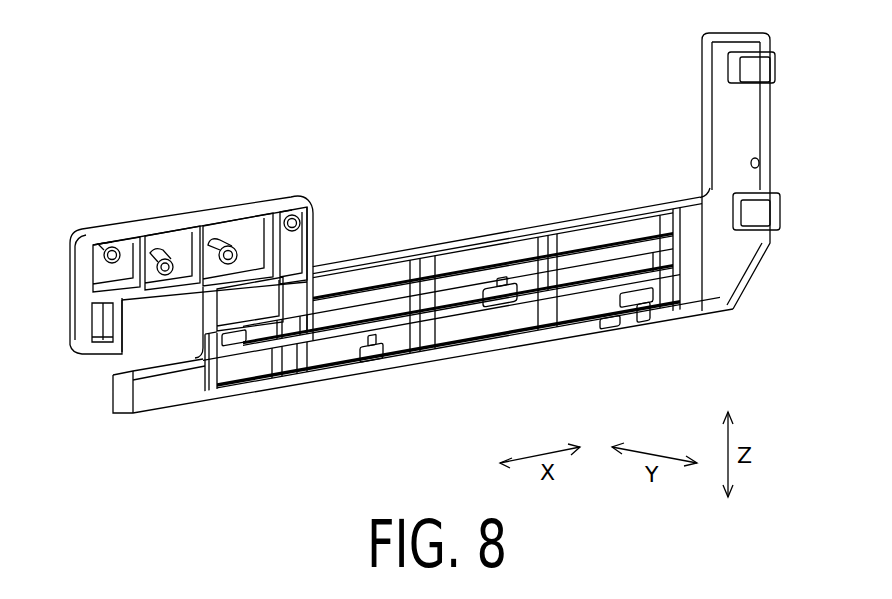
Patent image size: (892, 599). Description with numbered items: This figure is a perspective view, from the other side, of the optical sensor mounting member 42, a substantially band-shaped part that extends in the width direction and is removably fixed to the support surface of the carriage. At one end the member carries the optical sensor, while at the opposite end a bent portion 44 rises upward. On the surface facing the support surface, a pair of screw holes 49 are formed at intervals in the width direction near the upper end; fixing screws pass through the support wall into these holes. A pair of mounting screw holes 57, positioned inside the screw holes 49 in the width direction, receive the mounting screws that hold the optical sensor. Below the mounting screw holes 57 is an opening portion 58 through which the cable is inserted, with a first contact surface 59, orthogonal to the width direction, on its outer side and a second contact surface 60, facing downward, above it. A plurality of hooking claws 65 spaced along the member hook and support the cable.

The optical sensor mounting member 42 is at (349, 117).
The bent portion 44 is at (775, 136).
The screw holes 49 is at (112, 246).
The mounting screw holes 57 is at (168, 255).
The opening portion 58 is at (200, 321).
The first contact surface 59 is at (113, 395).
The second contact surface 60 is at (100, 368).
The hooking claws 65 is at (775, 65).